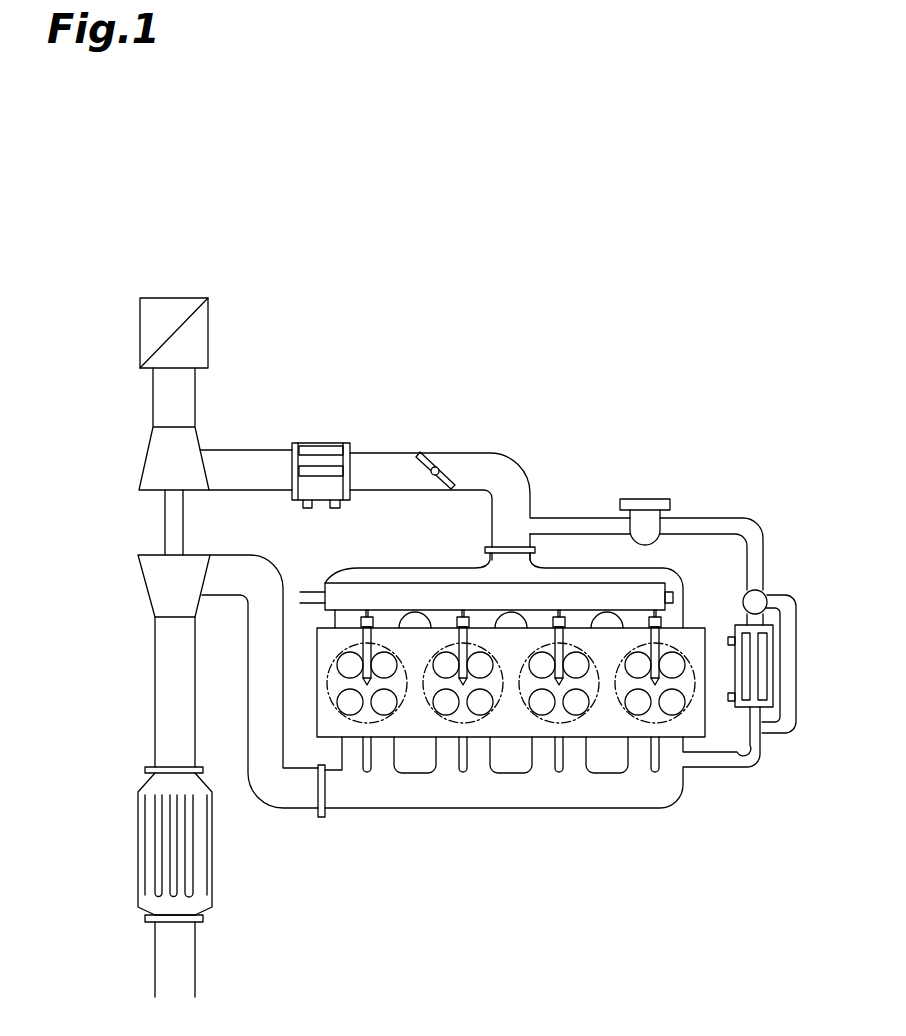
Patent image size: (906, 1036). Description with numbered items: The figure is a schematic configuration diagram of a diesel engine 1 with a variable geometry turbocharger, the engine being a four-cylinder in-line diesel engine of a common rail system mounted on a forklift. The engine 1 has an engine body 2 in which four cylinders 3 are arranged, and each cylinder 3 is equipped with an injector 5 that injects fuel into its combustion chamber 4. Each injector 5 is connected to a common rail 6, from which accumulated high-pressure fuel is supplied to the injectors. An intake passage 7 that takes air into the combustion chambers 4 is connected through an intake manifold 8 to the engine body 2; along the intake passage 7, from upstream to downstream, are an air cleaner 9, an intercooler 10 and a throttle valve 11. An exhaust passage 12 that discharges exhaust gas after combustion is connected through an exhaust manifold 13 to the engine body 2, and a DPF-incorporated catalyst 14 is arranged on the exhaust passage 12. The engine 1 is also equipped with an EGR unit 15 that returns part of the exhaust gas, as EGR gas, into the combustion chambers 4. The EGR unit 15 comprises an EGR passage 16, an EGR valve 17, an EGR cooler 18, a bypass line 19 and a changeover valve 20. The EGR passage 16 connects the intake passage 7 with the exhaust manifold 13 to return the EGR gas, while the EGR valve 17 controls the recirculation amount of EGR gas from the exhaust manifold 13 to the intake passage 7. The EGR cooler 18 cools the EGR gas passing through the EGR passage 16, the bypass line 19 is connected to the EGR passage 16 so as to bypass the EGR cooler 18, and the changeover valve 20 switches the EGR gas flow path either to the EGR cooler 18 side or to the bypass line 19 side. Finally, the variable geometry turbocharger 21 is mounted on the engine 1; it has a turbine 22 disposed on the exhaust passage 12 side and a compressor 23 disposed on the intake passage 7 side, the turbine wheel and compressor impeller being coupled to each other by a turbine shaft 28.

The diesel engine 1 is at (340, 205).
The engine body 2 is at (707, 722).
The cylinder 3 is at (383, 725).
The combustion chamber 4 is at (367, 713).
The injector 5 is at (363, 637).
The common rail 6 is at (360, 580).
The intake passage 7 is at (383, 462).
The intake manifold 8 is at (643, 577).
The air cleaner 9 is at (148, 333).
The intercooler 10 is at (322, 448).
The throttle valve 11 is at (430, 466).
The exhaust passage 12 is at (270, 786).
The exhaust manifold 13 is at (512, 796).
The DPF-incorporated catalyst 14 is at (143, 848).
The EGR unit 15 is at (720, 512).
The EGR passage 16 is at (700, 525).
The EGR valve 17 is at (650, 500).
The EGR cooler 18 is at (750, 708).
The bypass line 19 is at (792, 674).
The changeover valve 20 is at (758, 598).
The variable geometry turbocharger 21 is at (92, 560).
The turbine 22 is at (158, 590).
The compressor 23 is at (157, 472).
The turbine shaft 28 is at (178, 525).